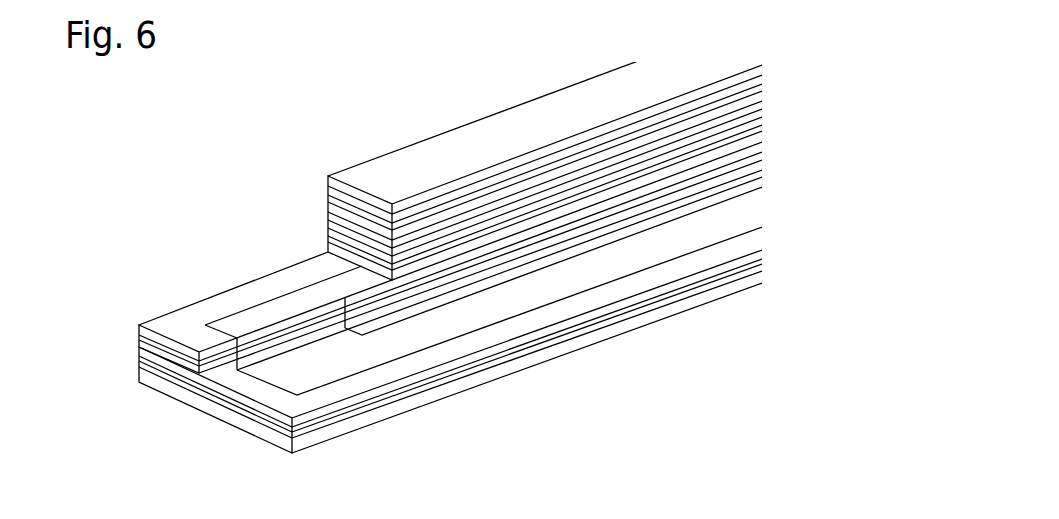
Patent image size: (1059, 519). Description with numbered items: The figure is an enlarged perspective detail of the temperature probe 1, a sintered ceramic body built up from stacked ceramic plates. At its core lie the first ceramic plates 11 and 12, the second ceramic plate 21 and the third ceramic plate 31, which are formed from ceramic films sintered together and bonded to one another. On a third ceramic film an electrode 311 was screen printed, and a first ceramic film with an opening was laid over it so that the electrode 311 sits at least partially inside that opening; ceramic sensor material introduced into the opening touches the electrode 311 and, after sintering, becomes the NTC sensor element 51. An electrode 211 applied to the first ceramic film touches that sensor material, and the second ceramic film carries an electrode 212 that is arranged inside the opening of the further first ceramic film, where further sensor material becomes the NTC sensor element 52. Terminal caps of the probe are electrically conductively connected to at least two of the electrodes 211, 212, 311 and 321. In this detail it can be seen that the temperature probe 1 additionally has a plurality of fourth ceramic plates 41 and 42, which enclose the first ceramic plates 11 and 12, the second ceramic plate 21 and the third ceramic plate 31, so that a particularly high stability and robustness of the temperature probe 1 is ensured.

The temperature probe 1 is at (141, 130).
The first ceramic plate 11 is at (150, 358).
The first ceramic plate 12 is at (147, 335).
The second ceramic plate 21 is at (150, 350).
The electrode 211 is at (303, 336).
The electrode 212 is at (322, 322).
The third ceramic plate 31 is at (150, 363).
The electrode 311 is at (335, 358).
The electrode 321 is at (250, 323).
The fourth ceramic plate 41 is at (142, 373).
The fourth ceramic plate 42 is at (352, 196).
The NTC sensor element 51 is at (252, 360).
The NTC sensor element 52 is at (294, 323).